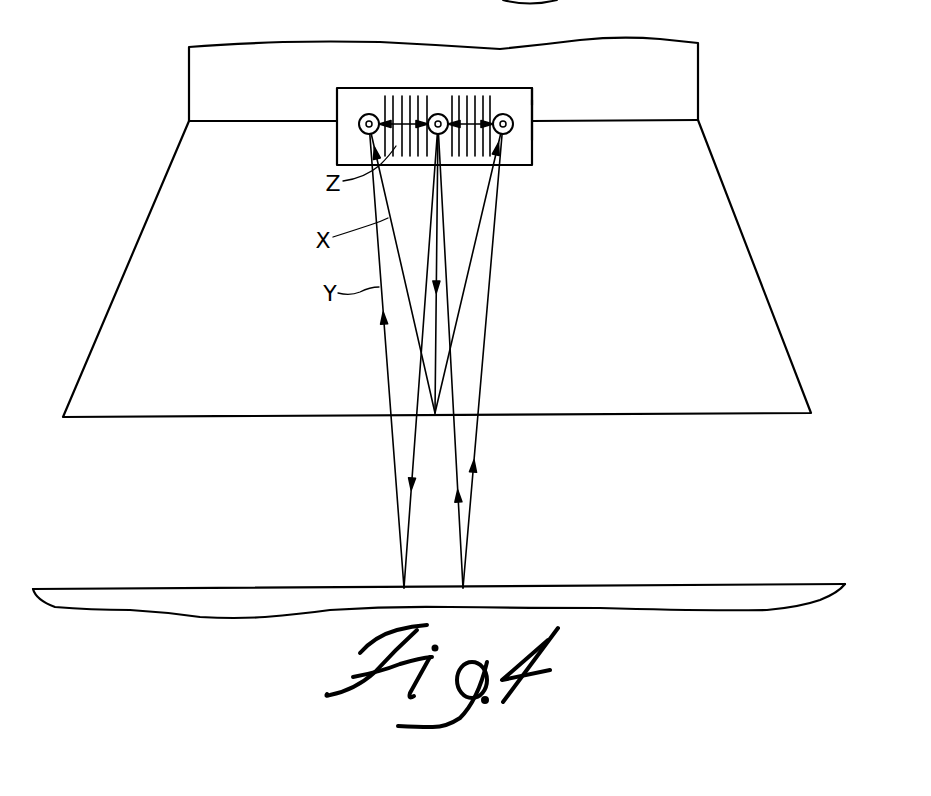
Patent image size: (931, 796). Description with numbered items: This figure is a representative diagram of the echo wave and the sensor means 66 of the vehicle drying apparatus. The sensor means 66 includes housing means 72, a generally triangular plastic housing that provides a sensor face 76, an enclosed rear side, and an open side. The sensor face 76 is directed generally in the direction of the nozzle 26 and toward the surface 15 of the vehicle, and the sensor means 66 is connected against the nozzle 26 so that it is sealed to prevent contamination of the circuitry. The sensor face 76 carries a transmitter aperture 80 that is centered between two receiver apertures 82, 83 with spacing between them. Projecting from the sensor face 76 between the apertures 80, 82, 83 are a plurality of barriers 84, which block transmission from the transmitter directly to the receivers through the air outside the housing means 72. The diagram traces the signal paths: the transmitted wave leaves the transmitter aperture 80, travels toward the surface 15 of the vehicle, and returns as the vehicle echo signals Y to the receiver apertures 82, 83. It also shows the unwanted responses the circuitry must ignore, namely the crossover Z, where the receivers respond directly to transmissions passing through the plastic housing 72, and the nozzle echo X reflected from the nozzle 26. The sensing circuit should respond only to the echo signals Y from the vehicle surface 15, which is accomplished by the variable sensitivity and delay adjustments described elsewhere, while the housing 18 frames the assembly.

The surface 15 is at (637, 595).
The housing 18 is at (688, 88).
The nozzle 26 is at (750, 283).
The sensor means 66 is at (532, 153).
The housing means 72 is at (537, 88).
The sensor face 76 is at (525, 110).
The transmitter aperture 80 is at (439, 113).
The receiver aperture 82 is at (361, 119).
The receiver aperture 83 is at (504, 113).
The barriers 84 is at (403, 100).